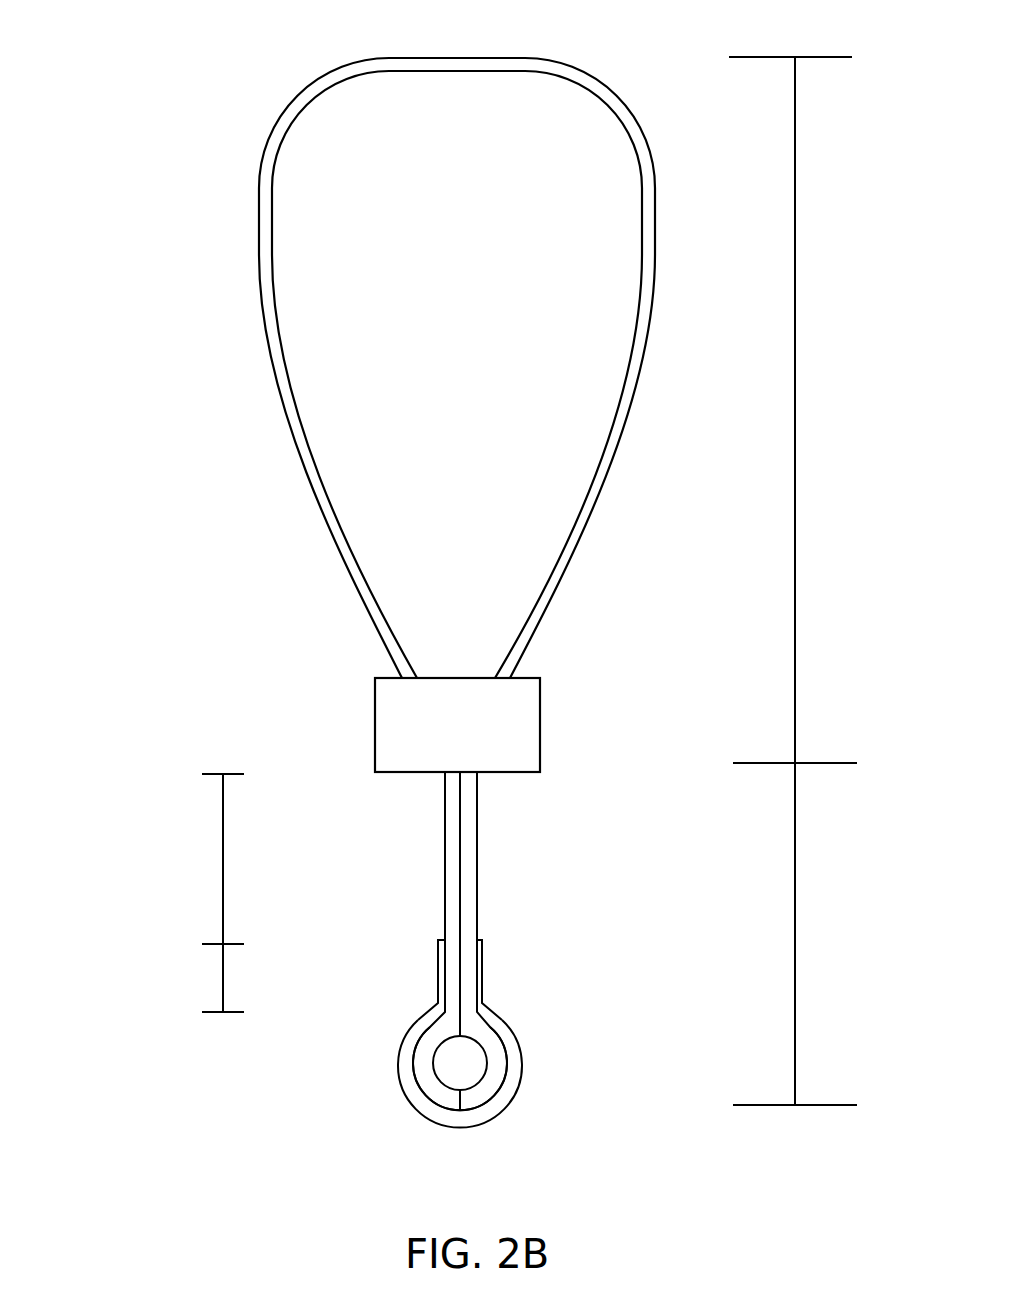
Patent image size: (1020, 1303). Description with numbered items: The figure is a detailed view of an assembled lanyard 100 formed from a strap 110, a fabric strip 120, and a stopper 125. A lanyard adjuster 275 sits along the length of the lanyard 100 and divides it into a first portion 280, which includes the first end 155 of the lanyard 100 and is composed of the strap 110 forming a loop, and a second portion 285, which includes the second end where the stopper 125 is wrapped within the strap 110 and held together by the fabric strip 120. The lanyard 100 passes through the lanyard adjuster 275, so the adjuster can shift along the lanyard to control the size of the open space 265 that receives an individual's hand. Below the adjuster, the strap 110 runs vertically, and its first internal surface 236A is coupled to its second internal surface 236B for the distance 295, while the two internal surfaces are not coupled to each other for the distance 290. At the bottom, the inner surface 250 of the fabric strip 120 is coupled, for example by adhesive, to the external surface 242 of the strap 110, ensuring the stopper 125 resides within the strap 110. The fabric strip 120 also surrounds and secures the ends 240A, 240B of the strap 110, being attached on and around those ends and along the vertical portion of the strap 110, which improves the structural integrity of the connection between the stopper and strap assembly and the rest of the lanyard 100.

The lanyard 100 is at (97, 46).
The strap 110 is at (627, 368).
The first end 155 is at (455, 57).
The open space 265 is at (395, 310).
The lanyard adjuster 275 is at (415, 714).
The first portion 280 is at (797, 478).
The second portion 285 is at (795, 992).
The distance 290 is at (215, 875).
The distance 295 is at (217, 1003).
The first internal surface 236A is at (460, 972).
The second internal surface 236B is at (460, 972).
The end 240A is at (460, 1092).
The end 240B is at (462, 1090).
The external surface 242 is at (507, 1061).
The inner surface 250 is at (503, 1088).
The stopper 125 is at (482, 1077).
The fabric strip 120 is at (417, 1090).